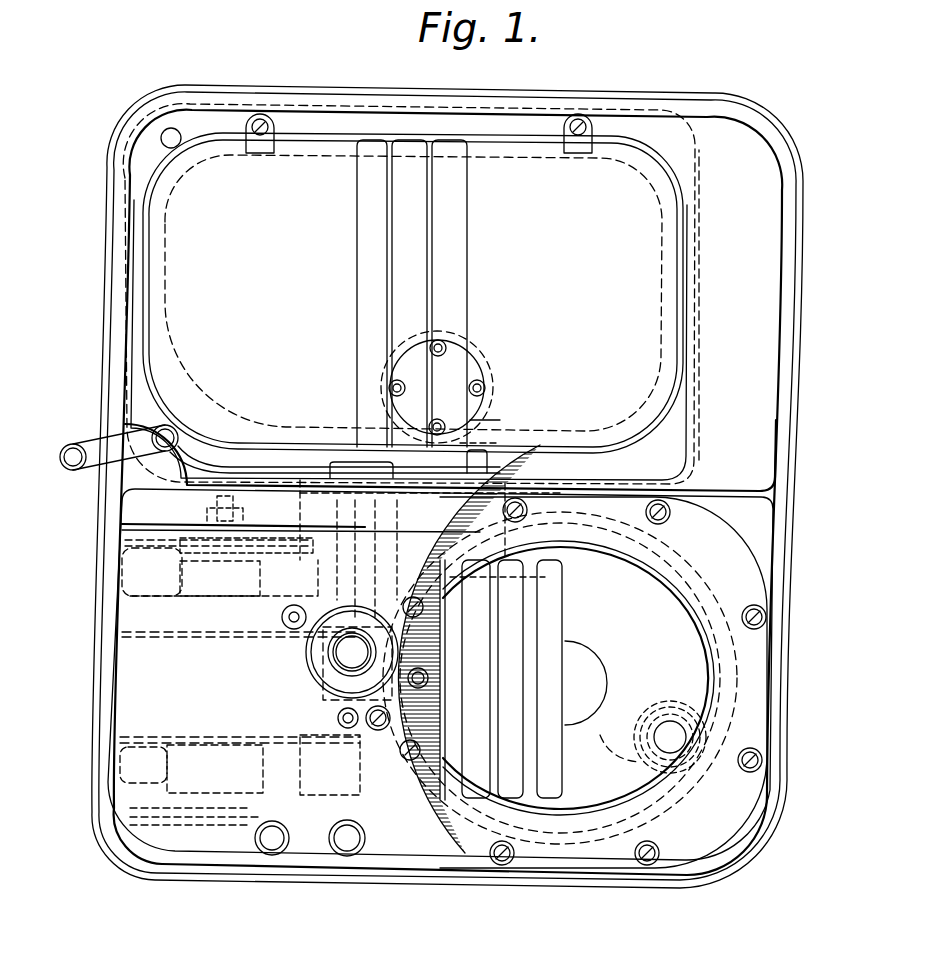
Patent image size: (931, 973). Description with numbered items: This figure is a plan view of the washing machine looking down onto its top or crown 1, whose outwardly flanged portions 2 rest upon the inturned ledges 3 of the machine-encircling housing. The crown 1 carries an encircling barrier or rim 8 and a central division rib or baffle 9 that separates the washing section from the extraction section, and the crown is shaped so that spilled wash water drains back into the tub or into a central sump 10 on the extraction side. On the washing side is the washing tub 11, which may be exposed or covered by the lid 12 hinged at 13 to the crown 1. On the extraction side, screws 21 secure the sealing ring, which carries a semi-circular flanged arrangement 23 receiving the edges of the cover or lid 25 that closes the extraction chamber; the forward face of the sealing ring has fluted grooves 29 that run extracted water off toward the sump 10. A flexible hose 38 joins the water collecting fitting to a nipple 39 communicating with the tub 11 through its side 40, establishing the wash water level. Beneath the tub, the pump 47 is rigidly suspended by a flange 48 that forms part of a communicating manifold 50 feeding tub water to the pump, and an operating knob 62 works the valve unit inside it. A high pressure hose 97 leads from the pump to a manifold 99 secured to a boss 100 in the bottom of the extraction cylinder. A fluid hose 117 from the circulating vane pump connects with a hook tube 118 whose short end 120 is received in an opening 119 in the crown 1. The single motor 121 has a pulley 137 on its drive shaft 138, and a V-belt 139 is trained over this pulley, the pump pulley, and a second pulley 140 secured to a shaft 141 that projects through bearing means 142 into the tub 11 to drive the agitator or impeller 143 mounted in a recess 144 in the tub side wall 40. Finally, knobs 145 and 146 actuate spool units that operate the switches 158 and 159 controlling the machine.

The crown 1 is at (712, 126).
The encircling barrier or rim 8 is at (245, 92).
The central division rib or baffle 9 is at (688, 490).
The central sump 10 is at (312, 668).
The washing tub 11 is at (702, 205).
The lid 12 is at (503, 173).
The hinge 13 is at (262, 131).
The screws 21 is at (670, 512).
The semi-circular flanged arrangement 23 is at (686, 578).
The cover or lid 25 is at (603, 682).
The fluted portions or grooves 29 is at (438, 776).
The flexible hose or conduit 38 is at (337, 522).
The nipple or sleeve 39 is at (343, 478).
The side of the tub 40 is at (513, 483).
The pump 47 is at (338, 690).
The flange 48 is at (482, 355).
The communicating manifold 50 is at (490, 614).
The operating knob 62 is at (352, 648).
The high pressure hose 97 is at (622, 742).
The manifold 99 is at (722, 686).
The boss 100 is at (650, 772).
The fluid hose 117 is at (72, 471).
The hook tube 118 is at (90, 447).
The opening 119 is at (206, 428).
The short end of the hook tube 120 is at (170, 432).
The motor 121 is at (135, 690).
The pulley 137 is at (210, 520).
The motor drive shaft 138 is at (217, 503).
The V-belt 139 is at (182, 532).
The second pulley 140 is at (548, 579).
The shaft 141 is at (486, 418).
The bearing means 142 is at (483, 443).
The agitator or impeller 143 is at (366, 456).
The recess 144 is at (300, 478).
The knob 145 is at (270, 846).
The knob 146 is at (348, 848).
The switch 158 is at (191, 785).
The switch 159 is at (312, 742).
The outwardly flanged portions 2 is at (810, 661).
The inturned ledges 3 is at (323, 652).